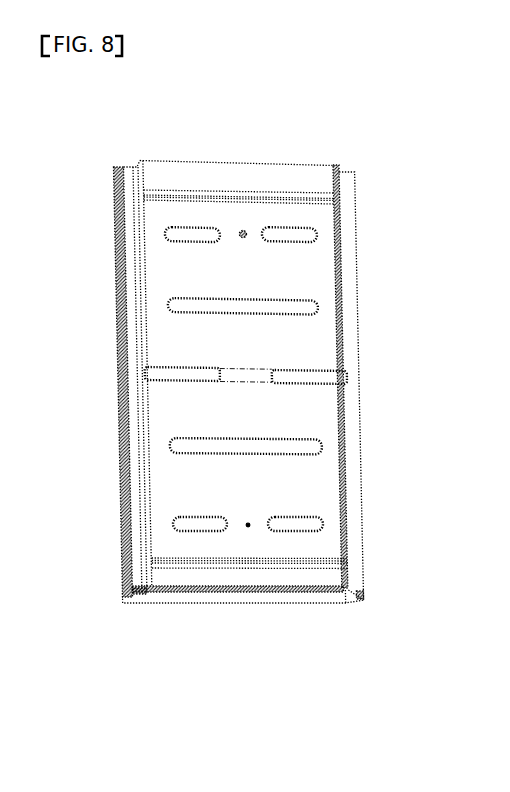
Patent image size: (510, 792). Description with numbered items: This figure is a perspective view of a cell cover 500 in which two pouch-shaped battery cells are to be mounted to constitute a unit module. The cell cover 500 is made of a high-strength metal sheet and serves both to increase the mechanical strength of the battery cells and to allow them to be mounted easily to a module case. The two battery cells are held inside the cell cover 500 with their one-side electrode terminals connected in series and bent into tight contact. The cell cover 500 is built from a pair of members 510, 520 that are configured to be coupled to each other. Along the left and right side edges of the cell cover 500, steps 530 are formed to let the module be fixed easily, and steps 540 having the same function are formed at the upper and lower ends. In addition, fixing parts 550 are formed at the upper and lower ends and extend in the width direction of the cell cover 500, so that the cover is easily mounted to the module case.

The cell cover 500 is at (93, 126).
The member 510 is at (183, 603).
The member 520 is at (250, 605).
The step 530 is at (134, 487).
The step 540 is at (232, 182).
The fixing part 550 is at (320, 562).